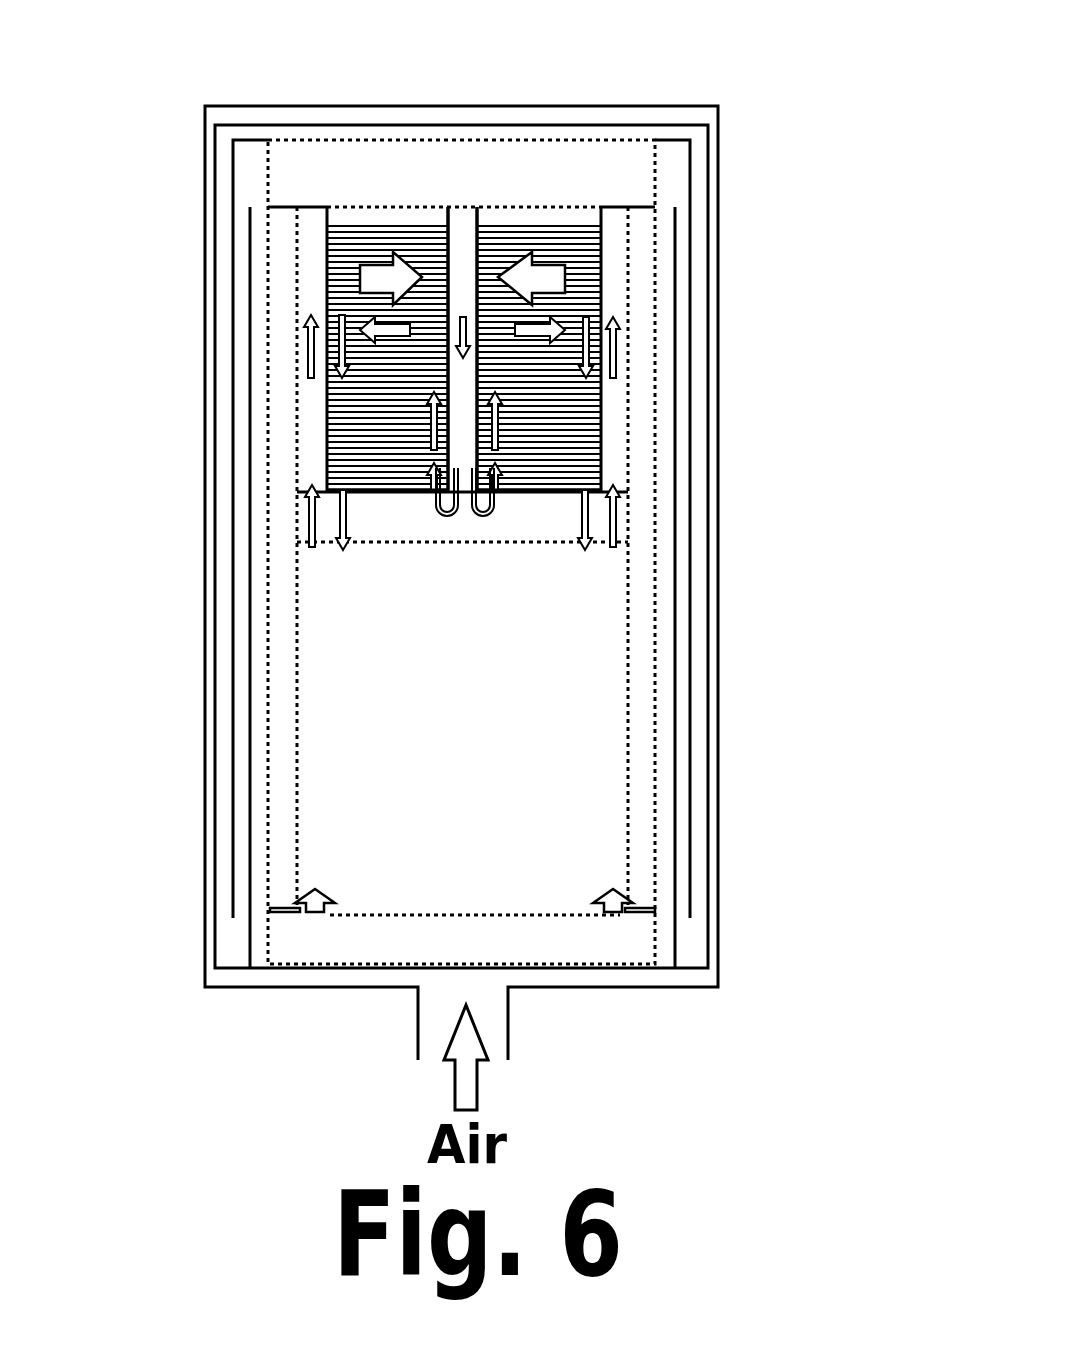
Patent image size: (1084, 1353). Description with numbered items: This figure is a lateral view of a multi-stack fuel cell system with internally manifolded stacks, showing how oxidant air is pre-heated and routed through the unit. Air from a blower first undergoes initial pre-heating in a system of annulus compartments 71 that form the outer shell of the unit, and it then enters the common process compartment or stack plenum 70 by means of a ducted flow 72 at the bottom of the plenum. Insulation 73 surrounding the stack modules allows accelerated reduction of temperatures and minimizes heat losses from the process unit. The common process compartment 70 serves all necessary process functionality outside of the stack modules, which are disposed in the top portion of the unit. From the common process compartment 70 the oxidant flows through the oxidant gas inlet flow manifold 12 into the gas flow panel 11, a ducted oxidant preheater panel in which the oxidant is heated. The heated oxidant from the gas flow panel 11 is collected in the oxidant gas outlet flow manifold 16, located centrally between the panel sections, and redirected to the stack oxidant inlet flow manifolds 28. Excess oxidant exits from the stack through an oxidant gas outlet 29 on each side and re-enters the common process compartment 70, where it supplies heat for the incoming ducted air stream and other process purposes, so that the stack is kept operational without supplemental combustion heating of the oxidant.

The gas flow panel 11 is at (570, 273).
The oxidant gas inlet flow manifold 12 is at (613, 458).
The oxidant gas outlet flow manifold 16 is at (461, 218).
The stack oxidant inlet flow manifolds 28 is at (480, 440).
The oxidant gas outlet 29 is at (327, 335).
The common process compartment 70 is at (500, 765).
The annulus compartments 71 is at (723, 712).
The ducted flow 72 is at (328, 908).
The insulation 73 is at (643, 610).